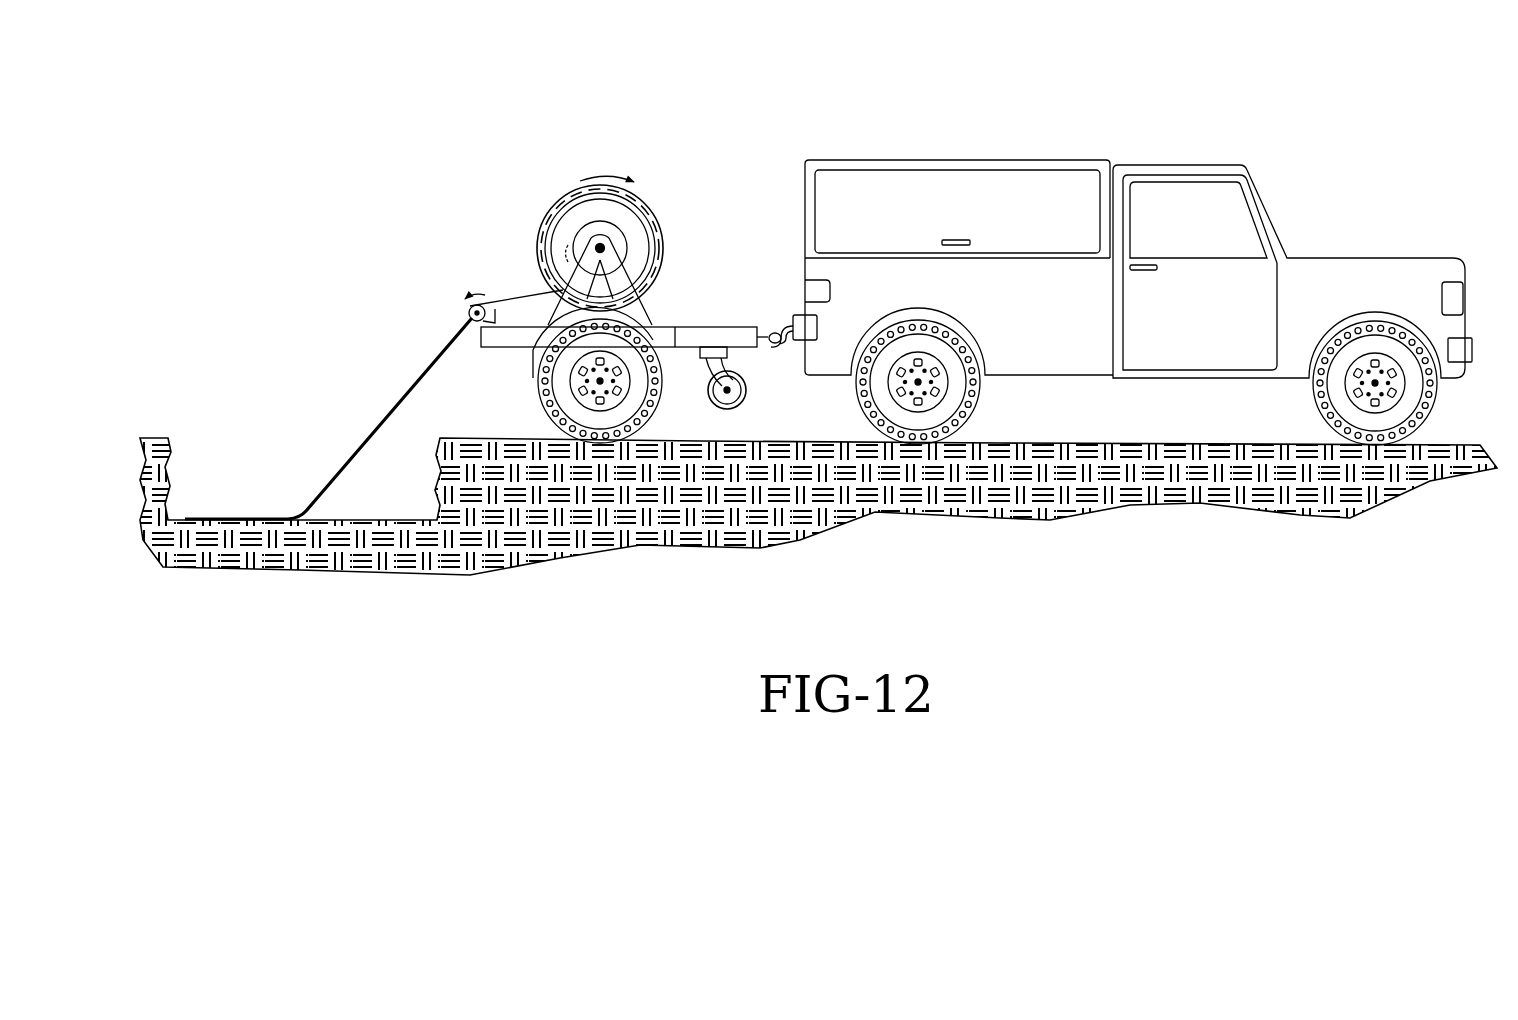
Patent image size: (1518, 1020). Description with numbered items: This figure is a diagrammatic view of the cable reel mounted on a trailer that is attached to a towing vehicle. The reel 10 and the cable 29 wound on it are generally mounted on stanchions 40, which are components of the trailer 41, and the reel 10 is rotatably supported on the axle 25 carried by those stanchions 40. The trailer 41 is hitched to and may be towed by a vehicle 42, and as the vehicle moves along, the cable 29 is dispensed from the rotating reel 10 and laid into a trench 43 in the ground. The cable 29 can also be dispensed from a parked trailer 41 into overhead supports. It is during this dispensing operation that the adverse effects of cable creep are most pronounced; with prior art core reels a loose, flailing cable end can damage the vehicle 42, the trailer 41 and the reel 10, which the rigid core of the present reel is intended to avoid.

The reel 10 is at (531, 221).
The axle 25 is at (606, 247).
The cable 29 is at (390, 418).
The stanchions 40 is at (637, 310).
The trailer 41 is at (671, 357).
The vehicle 42 is at (1000, 158).
The trench 43 is at (221, 494).